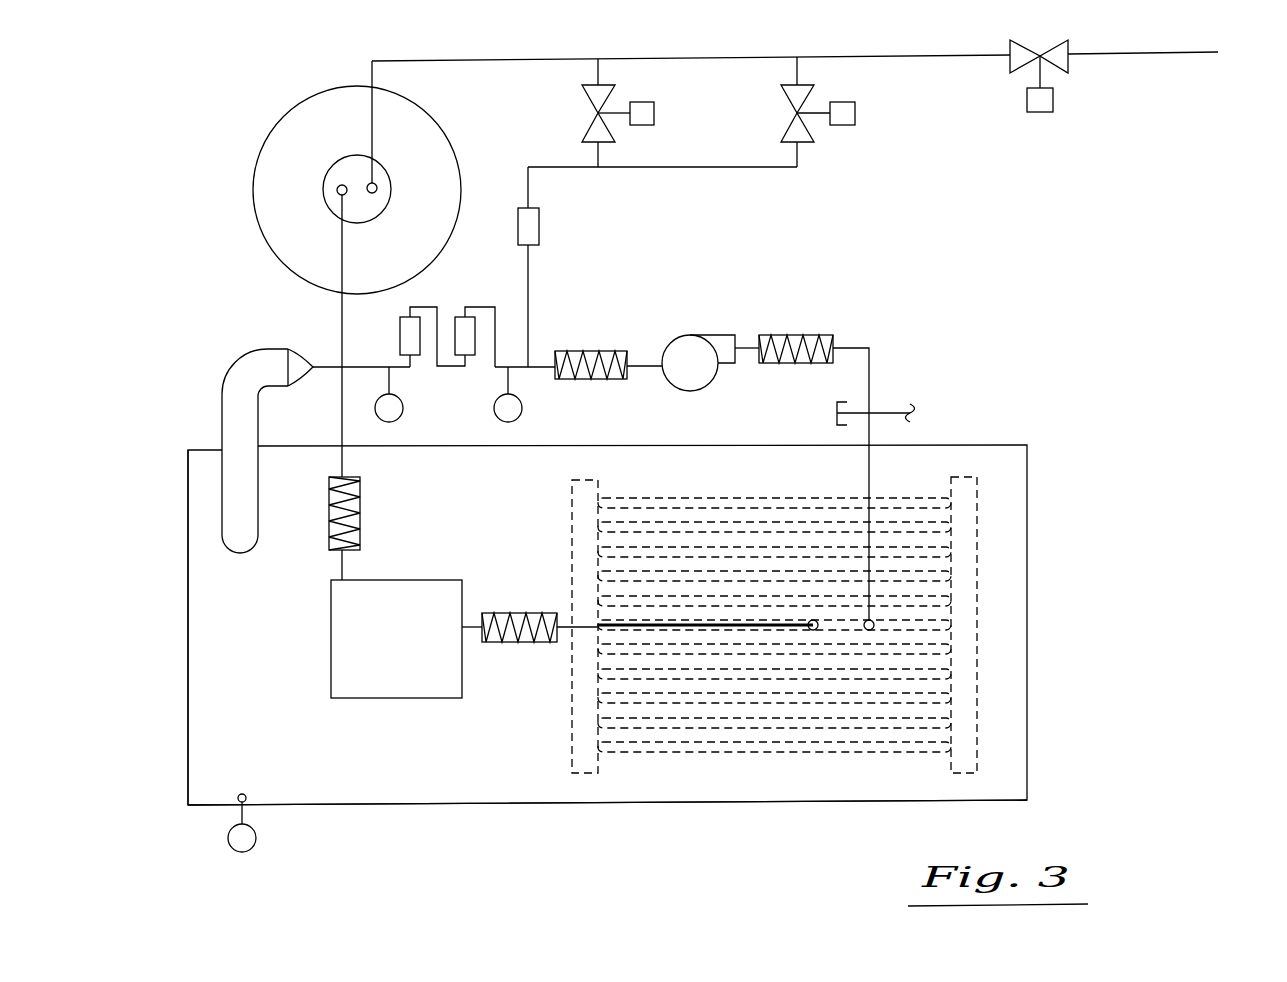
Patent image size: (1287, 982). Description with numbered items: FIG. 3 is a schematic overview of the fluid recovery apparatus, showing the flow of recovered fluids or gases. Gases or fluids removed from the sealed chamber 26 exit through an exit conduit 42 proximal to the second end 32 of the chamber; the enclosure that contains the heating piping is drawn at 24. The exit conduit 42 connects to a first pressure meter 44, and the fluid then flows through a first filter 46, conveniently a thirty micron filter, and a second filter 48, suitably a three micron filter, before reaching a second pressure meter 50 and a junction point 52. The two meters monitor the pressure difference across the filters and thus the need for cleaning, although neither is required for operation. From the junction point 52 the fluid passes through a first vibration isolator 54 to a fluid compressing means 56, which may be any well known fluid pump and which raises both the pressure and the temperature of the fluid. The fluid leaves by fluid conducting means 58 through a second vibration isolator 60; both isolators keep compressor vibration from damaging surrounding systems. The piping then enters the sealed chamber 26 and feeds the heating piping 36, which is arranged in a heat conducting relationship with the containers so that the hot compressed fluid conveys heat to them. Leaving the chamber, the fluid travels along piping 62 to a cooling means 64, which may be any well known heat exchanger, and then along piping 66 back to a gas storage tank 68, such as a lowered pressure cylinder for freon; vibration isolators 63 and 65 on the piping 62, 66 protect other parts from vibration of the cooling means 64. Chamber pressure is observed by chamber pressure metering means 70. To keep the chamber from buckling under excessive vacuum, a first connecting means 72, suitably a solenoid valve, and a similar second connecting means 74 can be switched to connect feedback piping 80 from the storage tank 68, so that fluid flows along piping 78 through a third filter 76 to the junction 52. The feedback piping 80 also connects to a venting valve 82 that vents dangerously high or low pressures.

The humidifier cabinet 24 is at (1042, 655).
The sealed chamber 26 is at (589, 817).
The second end 32 is at (178, 607).
The heating piping 36 is at (975, 522).
The exit conduit 42 is at (240, 378).
The first pressure meter 44 is at (403, 408).
The first filter 46 is at (400, 332).
The second filter 48 is at (453, 313).
The second pressure meter 50 is at (522, 408).
The junction point 52 is at (528, 360).
The first vibration isolator 54 is at (596, 346).
The fluid compressing means 56 is at (696, 342).
The fluid conducting means 58 is at (875, 383).
The second vibration isolator 60 is at (790, 335).
The piping 62 is at (585, 625).
The vibration isolator 63 is at (500, 644).
The cooling means 64 is at (398, 590).
The vibration isolator 65 is at (362, 503).
The piping 66 is at (342, 420).
The gas storage tank 68 is at (295, 160).
The chamber pressure metering means 70 is at (280, 846).
The first connecting means 72 is at (590, 113).
The second connecting means 74 is at (803, 118).
The third filter 76 is at (539, 228).
The piping 78 is at (528, 185).
The feedback piping 80 is at (658, 60).
The venting valve 82 is at (1045, 60).